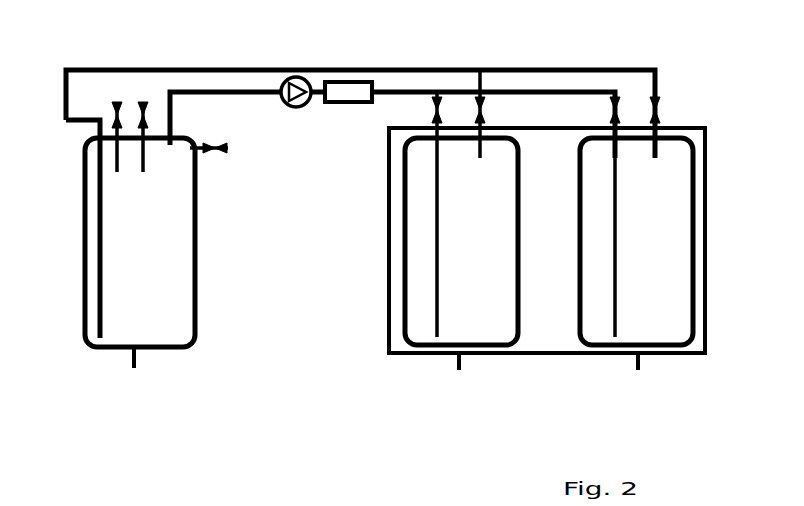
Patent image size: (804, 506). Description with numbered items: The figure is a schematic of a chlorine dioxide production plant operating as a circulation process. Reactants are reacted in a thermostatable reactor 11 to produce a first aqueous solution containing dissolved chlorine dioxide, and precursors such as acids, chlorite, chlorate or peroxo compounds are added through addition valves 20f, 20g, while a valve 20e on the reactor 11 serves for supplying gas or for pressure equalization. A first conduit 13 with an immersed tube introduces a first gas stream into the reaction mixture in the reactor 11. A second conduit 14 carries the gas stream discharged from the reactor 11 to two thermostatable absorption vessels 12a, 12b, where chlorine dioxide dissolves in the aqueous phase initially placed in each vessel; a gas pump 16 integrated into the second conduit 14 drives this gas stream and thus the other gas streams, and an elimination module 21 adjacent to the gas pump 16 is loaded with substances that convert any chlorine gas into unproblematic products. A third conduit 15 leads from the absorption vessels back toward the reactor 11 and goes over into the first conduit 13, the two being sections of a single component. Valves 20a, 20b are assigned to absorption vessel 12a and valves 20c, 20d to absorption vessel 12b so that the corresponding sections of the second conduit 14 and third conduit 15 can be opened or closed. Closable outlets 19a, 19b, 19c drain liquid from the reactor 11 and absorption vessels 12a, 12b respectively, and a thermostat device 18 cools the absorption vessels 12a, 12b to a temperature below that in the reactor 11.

The reactor 11 is at (167, 318).
The absorption vessel 12a is at (497, 325).
The absorption vessel 12b is at (660, 307).
The first conduit 13 is at (97, 212).
The second conduit 14 is at (217, 88).
The third conduit 15 is at (405, 67).
The gas pump 16 is at (293, 110).
The thermostat device 18 is at (705, 341).
The closable outlet 19a is at (130, 370).
The closable outlet 19b is at (458, 372).
The closable outlet 19c is at (638, 373).
The valve 20a is at (430, 110).
The valve 20b is at (487, 110).
The valve 20c is at (610, 110).
The valve 20d is at (660, 112).
The valve 20e is at (218, 155).
The addition valve 20f is at (113, 115).
The addition valve 20g is at (147, 115).
The elimination module 21 is at (352, 82).